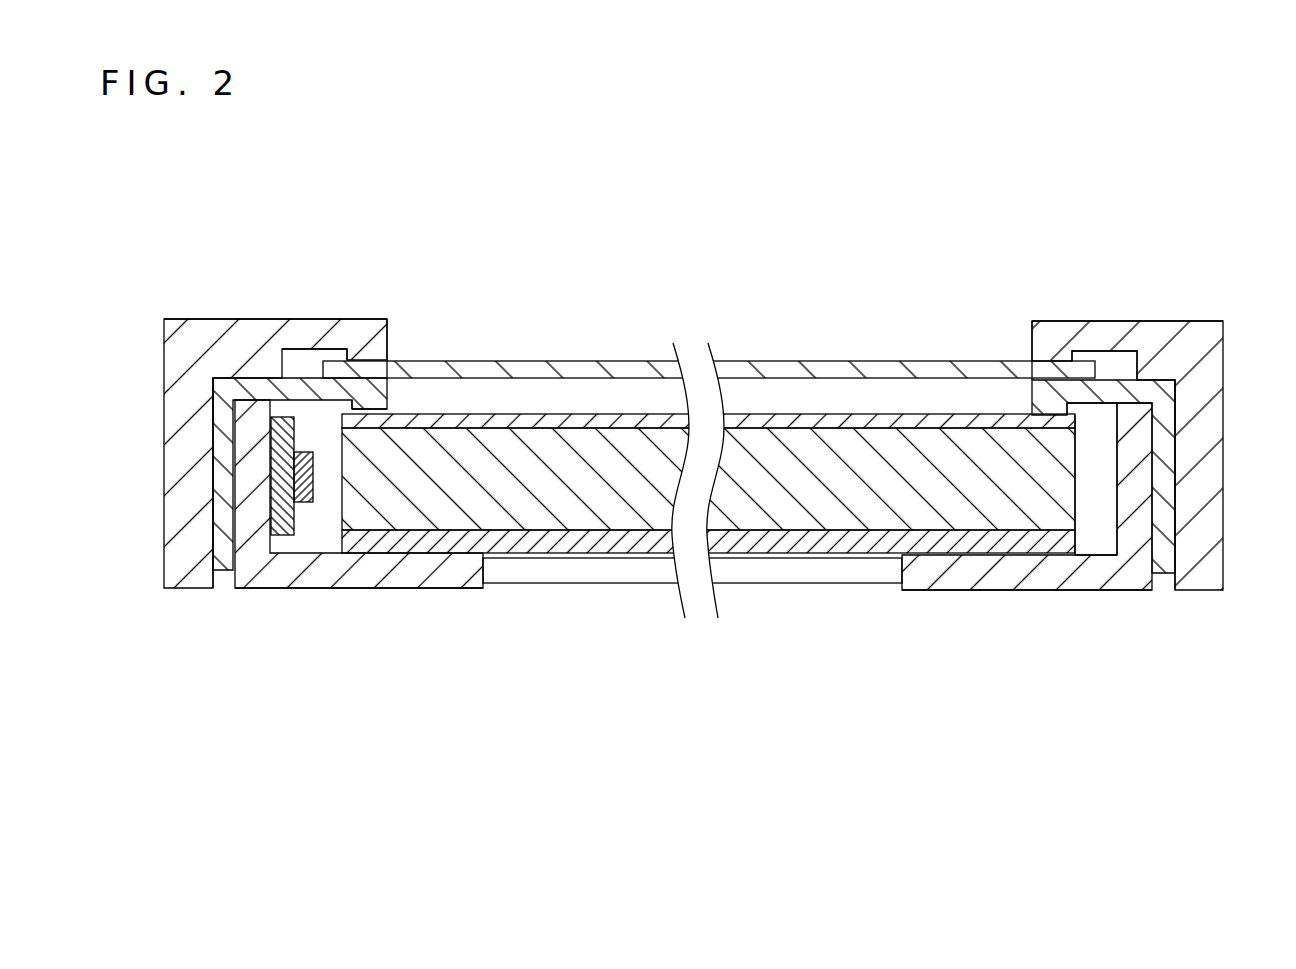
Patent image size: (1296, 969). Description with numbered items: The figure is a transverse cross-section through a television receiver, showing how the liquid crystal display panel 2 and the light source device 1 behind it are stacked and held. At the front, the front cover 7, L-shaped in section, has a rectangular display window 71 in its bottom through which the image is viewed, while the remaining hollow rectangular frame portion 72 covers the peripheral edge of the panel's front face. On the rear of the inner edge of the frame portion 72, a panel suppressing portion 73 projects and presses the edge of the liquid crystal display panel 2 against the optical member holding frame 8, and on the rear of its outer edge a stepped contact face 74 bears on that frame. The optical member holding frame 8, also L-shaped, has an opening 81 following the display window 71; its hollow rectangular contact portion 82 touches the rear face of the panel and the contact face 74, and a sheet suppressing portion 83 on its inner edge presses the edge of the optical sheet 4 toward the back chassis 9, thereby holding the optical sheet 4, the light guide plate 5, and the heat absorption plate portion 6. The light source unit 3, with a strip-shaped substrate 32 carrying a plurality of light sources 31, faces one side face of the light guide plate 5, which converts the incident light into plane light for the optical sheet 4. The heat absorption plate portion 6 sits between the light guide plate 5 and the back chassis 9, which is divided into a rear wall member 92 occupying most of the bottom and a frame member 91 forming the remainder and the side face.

The light source device 1 is at (840, 604).
The liquid crystal display panel 2 is at (921, 366).
The light source unit 3 is at (297, 576).
The light source 31 is at (300, 502).
The substrate 32 is at (287, 535).
The optical sheet 4 is at (822, 413).
The light guide plate 5 is at (1075, 473).
The heat absorption plate portion 6 is at (1098, 473).
The front cover 7 is at (270, 319).
The display window 71 is at (394, 344).
The frame portion 72 is at (318, 325).
The panel suppressing portion 73 is at (365, 358).
The contact face 74 is at (262, 377).
The optical member holding frame 8 is at (223, 577).
The opening 81 is at (397, 403).
The contact portion 82 is at (263, 387).
The sheet suppressing portion 83 is at (368, 406).
The back chassis 9 is at (693, 656).
The frame member 91 is at (473, 582).
The rear wall member 92 is at (540, 577).